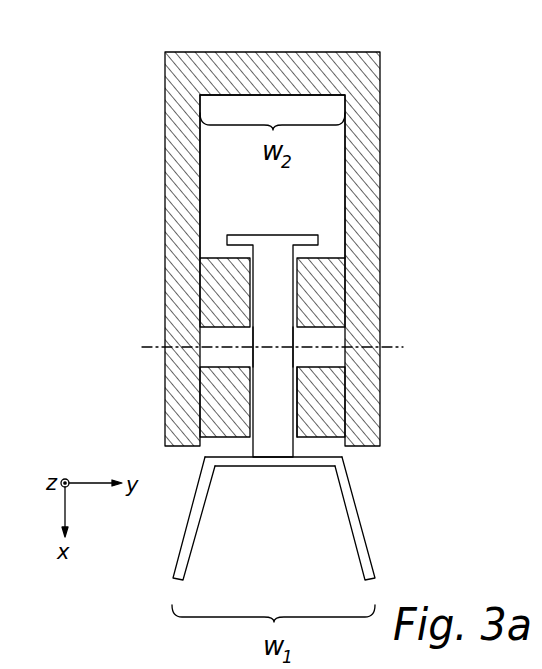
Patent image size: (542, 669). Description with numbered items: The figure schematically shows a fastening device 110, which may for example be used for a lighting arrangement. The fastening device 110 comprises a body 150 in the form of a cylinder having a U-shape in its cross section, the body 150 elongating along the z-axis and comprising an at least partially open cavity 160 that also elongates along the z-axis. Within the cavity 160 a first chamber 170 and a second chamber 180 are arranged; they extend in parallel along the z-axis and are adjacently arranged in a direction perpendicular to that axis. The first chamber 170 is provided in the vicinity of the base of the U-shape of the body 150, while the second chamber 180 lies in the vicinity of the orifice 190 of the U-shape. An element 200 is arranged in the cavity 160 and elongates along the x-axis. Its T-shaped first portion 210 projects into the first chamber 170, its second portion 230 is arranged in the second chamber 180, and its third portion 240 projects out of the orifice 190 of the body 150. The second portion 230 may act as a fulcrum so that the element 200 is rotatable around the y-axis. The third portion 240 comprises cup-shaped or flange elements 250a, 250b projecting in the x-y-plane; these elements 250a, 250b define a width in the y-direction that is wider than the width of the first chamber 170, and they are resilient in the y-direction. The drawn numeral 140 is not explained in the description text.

The fastening device 110 is at (281, 313).
The body 150 is at (380, 115).
The cavity 160 is at (333, 163).
The first chamber 170 is at (213, 213).
The first wall portion 140 is at (213, 325).
The second chamber 180 is at (330, 326).
The element 200 is at (305, 372).
The T-shaped first portion 210 is at (273, 263).
The second portion 230 is at (273, 340).
The orifice 190 is at (308, 446).
The third portion 240 is at (272, 458).
The flange element 250a is at (175, 563).
The flange element 250b is at (367, 538).